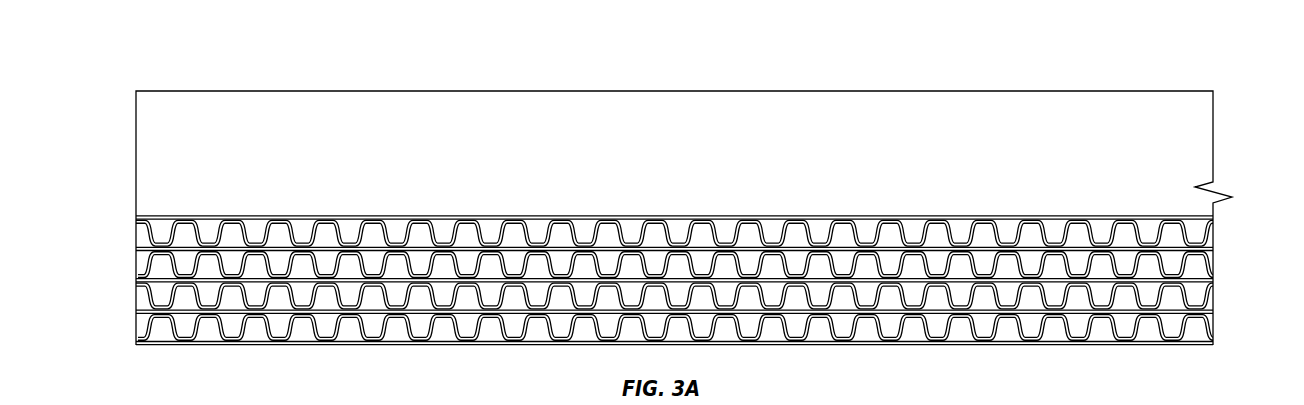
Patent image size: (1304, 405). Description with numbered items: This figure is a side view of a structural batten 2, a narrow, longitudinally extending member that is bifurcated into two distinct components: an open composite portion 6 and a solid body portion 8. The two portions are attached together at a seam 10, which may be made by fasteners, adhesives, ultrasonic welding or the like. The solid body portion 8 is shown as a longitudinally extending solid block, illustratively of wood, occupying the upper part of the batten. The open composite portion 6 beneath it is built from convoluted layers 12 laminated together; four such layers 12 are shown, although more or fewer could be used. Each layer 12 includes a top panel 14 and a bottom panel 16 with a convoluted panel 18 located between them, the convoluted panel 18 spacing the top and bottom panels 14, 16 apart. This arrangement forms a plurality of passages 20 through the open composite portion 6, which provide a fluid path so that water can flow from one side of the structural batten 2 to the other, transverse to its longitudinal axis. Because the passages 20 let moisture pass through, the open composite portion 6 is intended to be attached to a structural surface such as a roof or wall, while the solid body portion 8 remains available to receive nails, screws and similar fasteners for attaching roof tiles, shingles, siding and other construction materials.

The structural batten 2 is at (244, 78).
The open composite portion 6 is at (1226, 299).
The solid body portion 8 is at (1200, 144).
The seam 10 is at (1213, 217).
The convoluted layer 12 is at (145, 238).
The top panel 14 is at (542, 312).
The bottom panel 16 is at (395, 345).
The convoluted panel 18 is at (433, 328).
The passages 20 is at (590, 328).